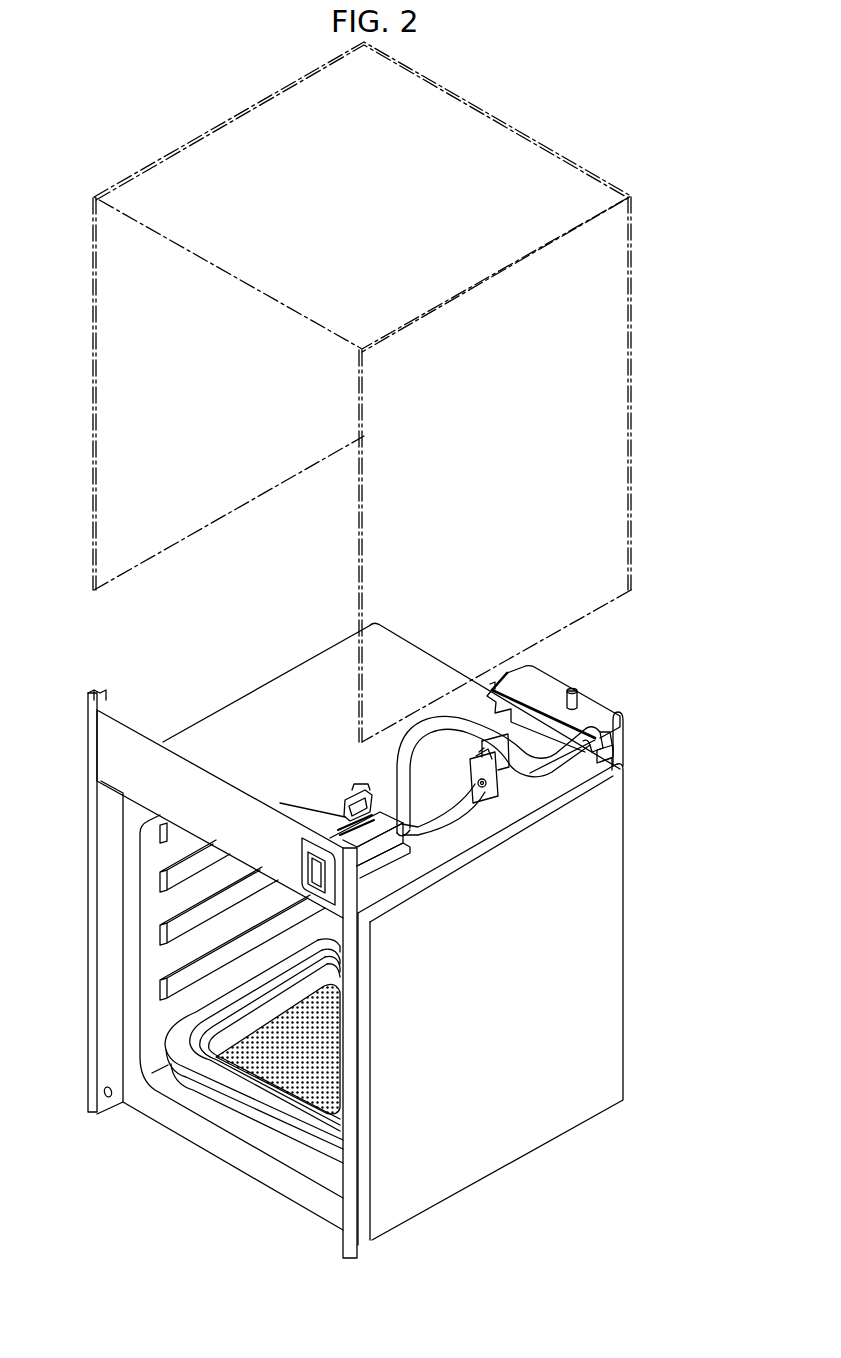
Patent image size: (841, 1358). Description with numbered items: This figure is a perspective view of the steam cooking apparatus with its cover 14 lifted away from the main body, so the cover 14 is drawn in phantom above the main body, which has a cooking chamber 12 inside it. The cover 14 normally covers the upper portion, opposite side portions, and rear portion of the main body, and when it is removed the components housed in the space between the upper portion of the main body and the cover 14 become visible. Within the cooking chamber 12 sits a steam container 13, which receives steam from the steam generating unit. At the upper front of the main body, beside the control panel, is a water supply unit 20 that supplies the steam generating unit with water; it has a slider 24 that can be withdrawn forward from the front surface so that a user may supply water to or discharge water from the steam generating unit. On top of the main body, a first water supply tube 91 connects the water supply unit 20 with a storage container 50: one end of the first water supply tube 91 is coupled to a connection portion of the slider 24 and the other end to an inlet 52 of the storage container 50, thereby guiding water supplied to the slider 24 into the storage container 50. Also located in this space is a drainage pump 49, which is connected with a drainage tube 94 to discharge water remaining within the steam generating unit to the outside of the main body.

The cooking chamber 12 is at (186, 946).
The steam container 13 is at (243, 1088).
The cover 14 is at (622, 440).
The water supply unit 20 is at (385, 872).
The slider 24 is at (310, 877).
The drainage pump 49 is at (495, 803).
The storage container 50 is at (586, 692).
The inlet 52 is at (612, 728).
The first water supply tube 91 is at (402, 778).
The drainage tube 94 is at (573, 785).